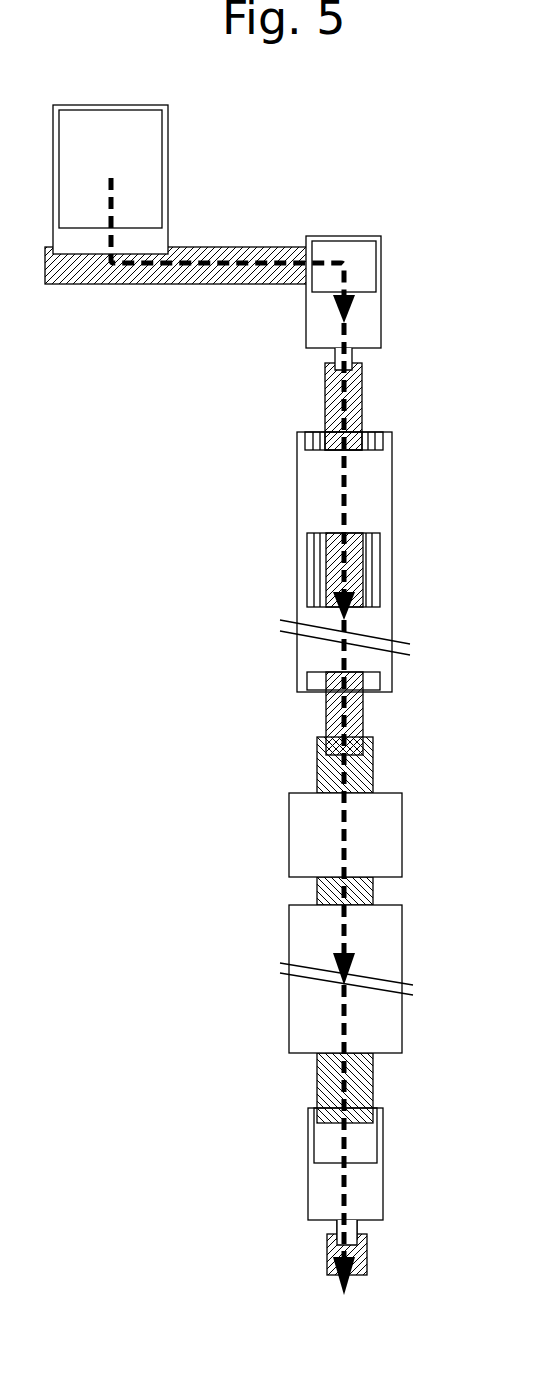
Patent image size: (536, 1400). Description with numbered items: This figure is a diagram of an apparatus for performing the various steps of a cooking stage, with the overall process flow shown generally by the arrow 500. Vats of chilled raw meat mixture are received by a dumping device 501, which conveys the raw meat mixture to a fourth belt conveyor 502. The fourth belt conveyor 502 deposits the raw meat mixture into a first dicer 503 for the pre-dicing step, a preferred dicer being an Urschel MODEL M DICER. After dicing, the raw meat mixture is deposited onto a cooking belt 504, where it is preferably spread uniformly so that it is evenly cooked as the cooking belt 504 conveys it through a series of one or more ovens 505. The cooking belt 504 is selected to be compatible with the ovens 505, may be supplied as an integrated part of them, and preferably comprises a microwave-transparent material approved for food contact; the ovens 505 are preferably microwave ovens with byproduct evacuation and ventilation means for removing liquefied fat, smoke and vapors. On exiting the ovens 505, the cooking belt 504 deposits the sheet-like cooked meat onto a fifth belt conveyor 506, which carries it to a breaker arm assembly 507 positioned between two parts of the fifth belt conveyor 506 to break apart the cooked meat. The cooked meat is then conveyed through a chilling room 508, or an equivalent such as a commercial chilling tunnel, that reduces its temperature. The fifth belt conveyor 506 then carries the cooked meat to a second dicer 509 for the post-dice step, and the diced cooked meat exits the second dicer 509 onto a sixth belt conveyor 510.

The process flow arrow 500 is at (118, 210).
The dumping device 501 is at (127, 133).
The fourth belt conveyor 502 is at (219, 284).
The first dicer 503 is at (376, 302).
The cooking belt 504 is at (362, 396).
The ovens 505 is at (382, 500).
The fifth belt conveyor 506 is at (318, 778).
The breaker arm assembly 507 is at (387, 852).
The chilling room 508 is at (396, 961).
The second dicer 509 is at (370, 1182).
The sixth belt conveyor 510 is at (367, 1258).